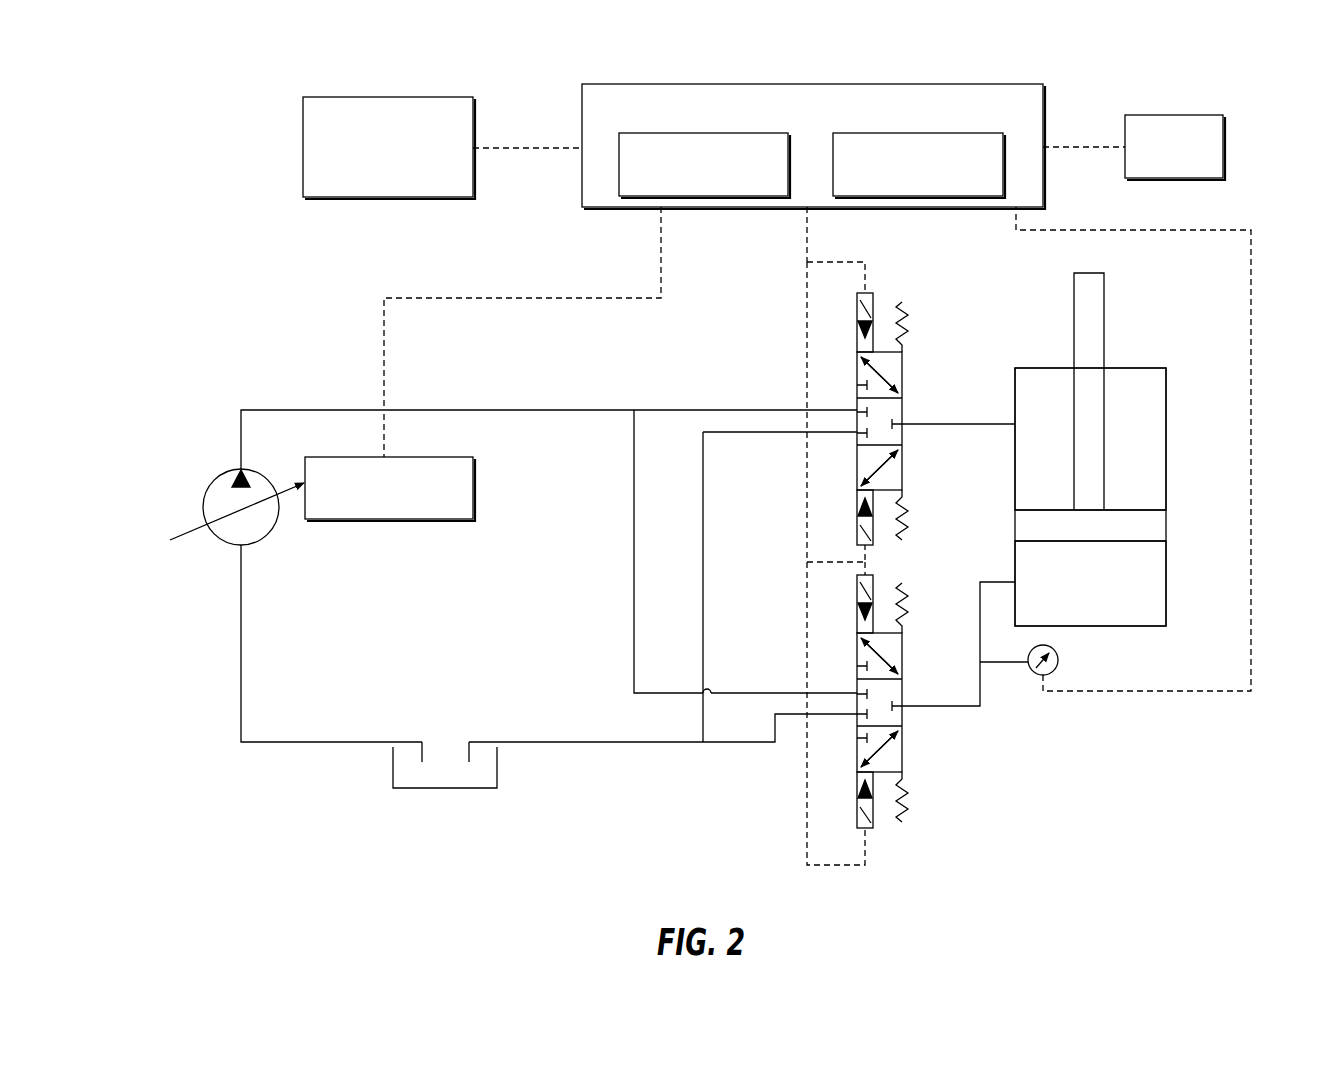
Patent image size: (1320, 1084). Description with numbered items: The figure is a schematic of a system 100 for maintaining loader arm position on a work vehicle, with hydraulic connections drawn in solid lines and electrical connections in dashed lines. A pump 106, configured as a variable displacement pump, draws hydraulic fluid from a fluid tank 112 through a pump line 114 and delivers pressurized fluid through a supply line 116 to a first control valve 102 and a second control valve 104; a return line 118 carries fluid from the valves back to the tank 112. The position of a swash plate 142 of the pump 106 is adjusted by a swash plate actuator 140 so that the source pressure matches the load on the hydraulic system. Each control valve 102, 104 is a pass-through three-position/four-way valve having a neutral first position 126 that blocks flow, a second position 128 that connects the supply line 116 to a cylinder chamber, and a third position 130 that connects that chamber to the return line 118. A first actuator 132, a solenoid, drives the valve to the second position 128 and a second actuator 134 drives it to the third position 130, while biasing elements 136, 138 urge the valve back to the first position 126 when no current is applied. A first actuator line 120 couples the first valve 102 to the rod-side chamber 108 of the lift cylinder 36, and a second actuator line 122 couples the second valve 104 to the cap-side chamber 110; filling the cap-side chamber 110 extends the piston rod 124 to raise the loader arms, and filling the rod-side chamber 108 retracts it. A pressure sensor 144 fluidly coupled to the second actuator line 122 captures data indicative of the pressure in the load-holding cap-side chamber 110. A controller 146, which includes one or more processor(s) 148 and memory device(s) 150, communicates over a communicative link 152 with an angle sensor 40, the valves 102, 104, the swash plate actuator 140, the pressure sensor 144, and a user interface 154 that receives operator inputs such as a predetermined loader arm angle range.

The system 100 is at (178, 126).
The angle sensor 40 is at (390, 197).
The controller 146 is at (830, 84).
The processor(s) 148 is at (713, 198).
The memory device(s) 150 is at (913, 198).
The user interface 154 is at (1178, 115).
The communicative link 152 is at (530, 150).
The pump 106 is at (208, 490).
The swash plate 142 is at (185, 535).
The swash plate actuator 140 is at (385, 519).
The supply line 116 is at (320, 410).
The pump line 114 is at (323, 742).
The return line 118 is at (632, 742).
The fluid tank 112 is at (445, 788).
The first control valve 102 is at (963, 329).
The second control valve 104 is at (899, 838).
The first actuator 132 is at (857, 330).
The second actuator 134 is at (857, 527).
The biasing element 136 is at (902, 313).
The biasing element 138 is at (905, 535).
The second position 128 is at (900, 390).
The first position 126 is at (900, 431).
The third position 130 is at (900, 467).
The first actuator line 120 is at (955, 424).
The second actuator line 122 is at (982, 690).
The pressure sensor 144 is at (1058, 660).
The lift cylinder 36 is at (1156, 352).
The piston rod 124 is at (1074, 330).
The rod-side chamber 108 is at (1167, 445).
The cap-side chamber 110 is at (1167, 595).